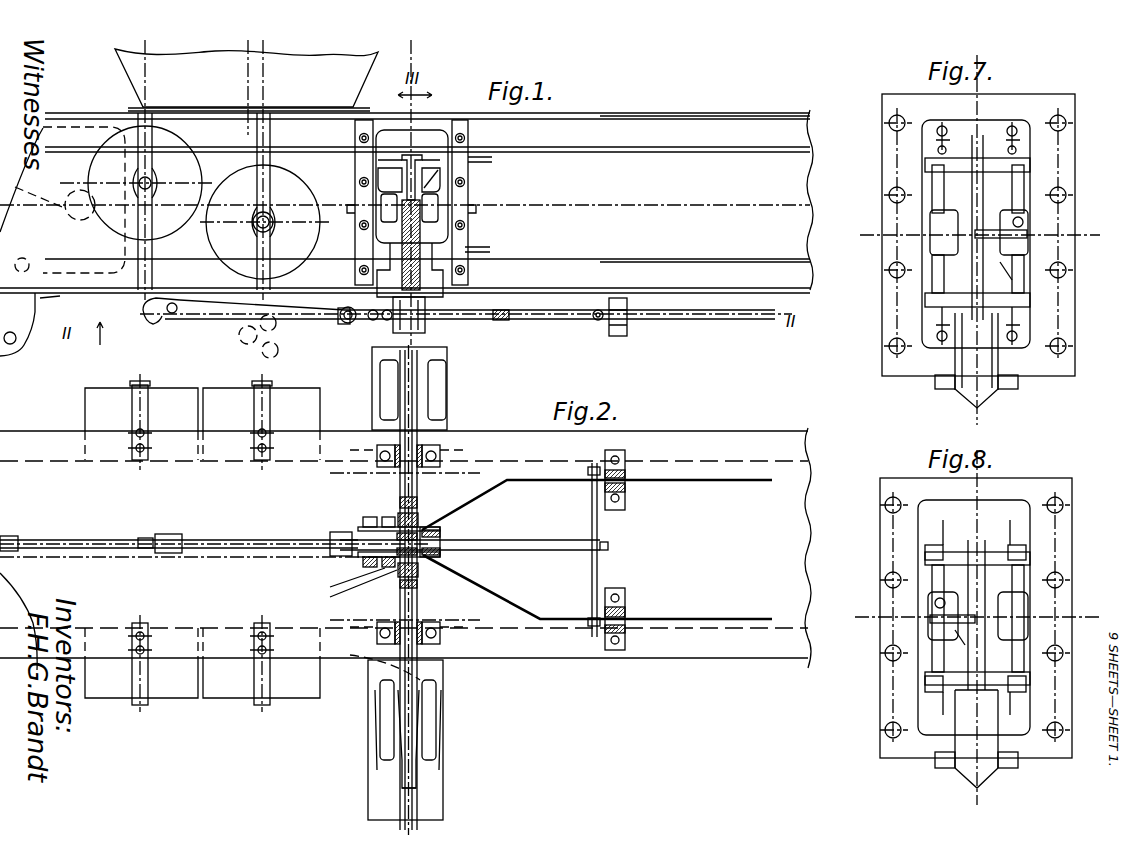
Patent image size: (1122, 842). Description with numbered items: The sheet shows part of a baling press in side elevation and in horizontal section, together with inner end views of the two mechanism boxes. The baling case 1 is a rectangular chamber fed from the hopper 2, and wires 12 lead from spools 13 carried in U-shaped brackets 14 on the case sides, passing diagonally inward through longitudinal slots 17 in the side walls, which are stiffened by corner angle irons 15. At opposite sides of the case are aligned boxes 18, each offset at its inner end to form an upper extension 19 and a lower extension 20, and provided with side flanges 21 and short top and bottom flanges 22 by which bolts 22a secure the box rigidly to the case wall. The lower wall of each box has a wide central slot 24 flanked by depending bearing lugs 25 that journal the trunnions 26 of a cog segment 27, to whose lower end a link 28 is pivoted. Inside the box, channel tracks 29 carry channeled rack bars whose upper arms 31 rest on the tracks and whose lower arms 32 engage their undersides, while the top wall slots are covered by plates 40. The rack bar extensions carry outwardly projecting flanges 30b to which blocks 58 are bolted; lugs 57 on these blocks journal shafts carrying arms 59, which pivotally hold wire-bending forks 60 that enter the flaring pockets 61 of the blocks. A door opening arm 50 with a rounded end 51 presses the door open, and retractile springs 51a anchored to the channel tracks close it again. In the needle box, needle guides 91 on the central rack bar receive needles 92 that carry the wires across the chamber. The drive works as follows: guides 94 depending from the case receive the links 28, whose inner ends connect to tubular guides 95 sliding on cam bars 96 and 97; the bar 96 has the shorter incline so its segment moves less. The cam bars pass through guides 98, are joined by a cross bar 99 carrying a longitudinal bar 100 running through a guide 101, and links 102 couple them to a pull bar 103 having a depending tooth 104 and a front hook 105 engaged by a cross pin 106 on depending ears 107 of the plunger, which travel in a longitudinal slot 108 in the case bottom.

In FIG. 1, the baling case 1 is at (712, 186).
In FIG. 2, the baling case 1 is at (730, 582).
In FIG. 1, the hopper 2 is at (246, 80).
In FIG. 1, the wires 12 is at (220, 155).
In FIG. 1, the spools 13 is at (114, 220).
In FIG. 2, the spools 13 is at (93, 698).
In FIG. 1, the U-shaped brackets 14 is at (147, 212).
In FIG. 2, the U-shaped brackets 14 is at (137, 705).
In FIG. 1, the corner angle irons 15 is at (790, 134).
In FIG. 7, the corner angle irons 15 is at (880, 131).
In FIG. 1, the longitudinal slots 17 is at (492, 160).
In FIG. 1, the boxes 18 is at (446, 370).
In FIG. 2, the boxes 18 is at (395, 786).
In FIG. 1, the upper enlargement or extension 19 is at (428, 148).
In FIG. 8, the upper enlargement or extension 19 is at (936, 510).
In FIG. 8, the lower enlargement or extension 20 is at (936, 724).
In FIG. 1, the side flanges 21 is at (466, 240).
In FIG. 7, the side flanges 21 is at (992, 234).
In FIG. 8, the side flanges 21 is at (890, 599).
In FIG. 1, the top and bottom flanges 22 is at (384, 126).
In FIG. 2, the top and bottom flanges 22 is at (450, 650).
In FIG. 7, the top and bottom flanges 22 is at (910, 370).
In FIG. 8, the top and bottom flanges 22 is at (1006, 490).
In FIG. 1, the bolts 22a is at (468, 146).
In FIG. 7, the central slots or openings 24 is at (985, 357).
In FIG. 8, the central slots or openings 24 is at (982, 752).
In FIG. 1, the bearing lugs 25 is at (396, 268).
In FIG. 2, the bearing lugs 25 is at (430, 712).
In FIG. 7, the bearing lugs 25 is at (985, 406).
In FIG. 8, the bearing lugs 25 is at (986, 792).
In FIG. 1, the trunnions 26 is at (466, 279).
In FIG. 2, the trunnions 26 is at (436, 698).
In FIG. 1, the cog segments 27 is at (440, 255).
In FIG. 2, the cog segments 27 is at (418, 775).
In FIG. 2, the links 28 is at (398, 601).
In FIG. 1, the channel tracks 29 is at (384, 184).
In FIG. 7, the channel tracks 29 is at (945, 222).
In FIG. 8, the channel tracks 29 is at (925, 630).
In FIG. 7, the outwardly projecting flanges 30b is at (935, 201).
In FIG. 1, the upper arms 31 is at (450, 172).
In FIG. 1, the lower arms 32 is at (380, 236).
In FIG. 1, the plates 40 is at (402, 170).
In FIG. 7, the door opening arm 50 is at (1004, 268).
In FIG. 8, the door opening arm 50 is at (957, 636).
In FIG. 7, the rounded outer end 51 is at (1022, 234).
In FIG. 8, the rounded outer end 51 is at (930, 620).
In FIG. 7, the retractile springs 51a is at (1022, 214).
In FIG. 8, the retractile springs 51a is at (936, 590).
In FIG. 7, the lugs 57 is at (948, 148).
In FIG. 7, the blocks 58 is at (940, 180).
In FIG. 7, the arms 59 is at (1010, 346).
In FIG. 7, the wire-bending forks 60 is at (940, 140).
In FIG. 7, the flaring pockets 61 is at (940, 152).
In FIG. 8, the needle guides 91 is at (965, 624).
In FIG. 8, the needles 92 is at (930, 548).
In FIG. 1, the guides 94 is at (438, 338).
In FIG. 2, the guides 94 is at (441, 452).
In FIG. 2, the tubular guides 95 is at (428, 527).
In FIG. 1, the cam bar 96 is at (713, 322).
In FIG. 2, the cam bar 96 is at (763, 482).
In FIG. 2, the cam bar 97 is at (762, 618).
In FIG. 1, the guides 98 is at (619, 336).
In FIG. 2, the guides 98 is at (618, 588).
In FIG. 1, the cross bar 99 is at (598, 322).
In FIG. 2, the cross bar 99 is at (590, 521).
In FIG. 2, the longitudinally extending bar 100 is at (560, 550).
In FIG. 2, the guide 101 is at (440, 557).
In FIG. 1, the links 102 is at (373, 395).
In FIG. 2, the links 102 is at (352, 542).
In FIG. 1, the pull bar 103 is at (226, 321).
In FIG. 2, the pull bar 103 is at (220, 540).
In FIG. 1, the depending tooth 104 is at (300, 332).
In FIG. 2, the depending tooth 104 is at (283, 545).
In FIG. 1, the down-turned hook 105 is at (157, 322).
In FIG. 2, the down-turned hook 105 is at (155, 540).
In FIG. 1, the cross pin 106 is at (17, 343).
In FIG. 1, the depending ears 107 is at (23, 312).
In FIG. 2, the longitudinal slot 108 is at (100, 560).